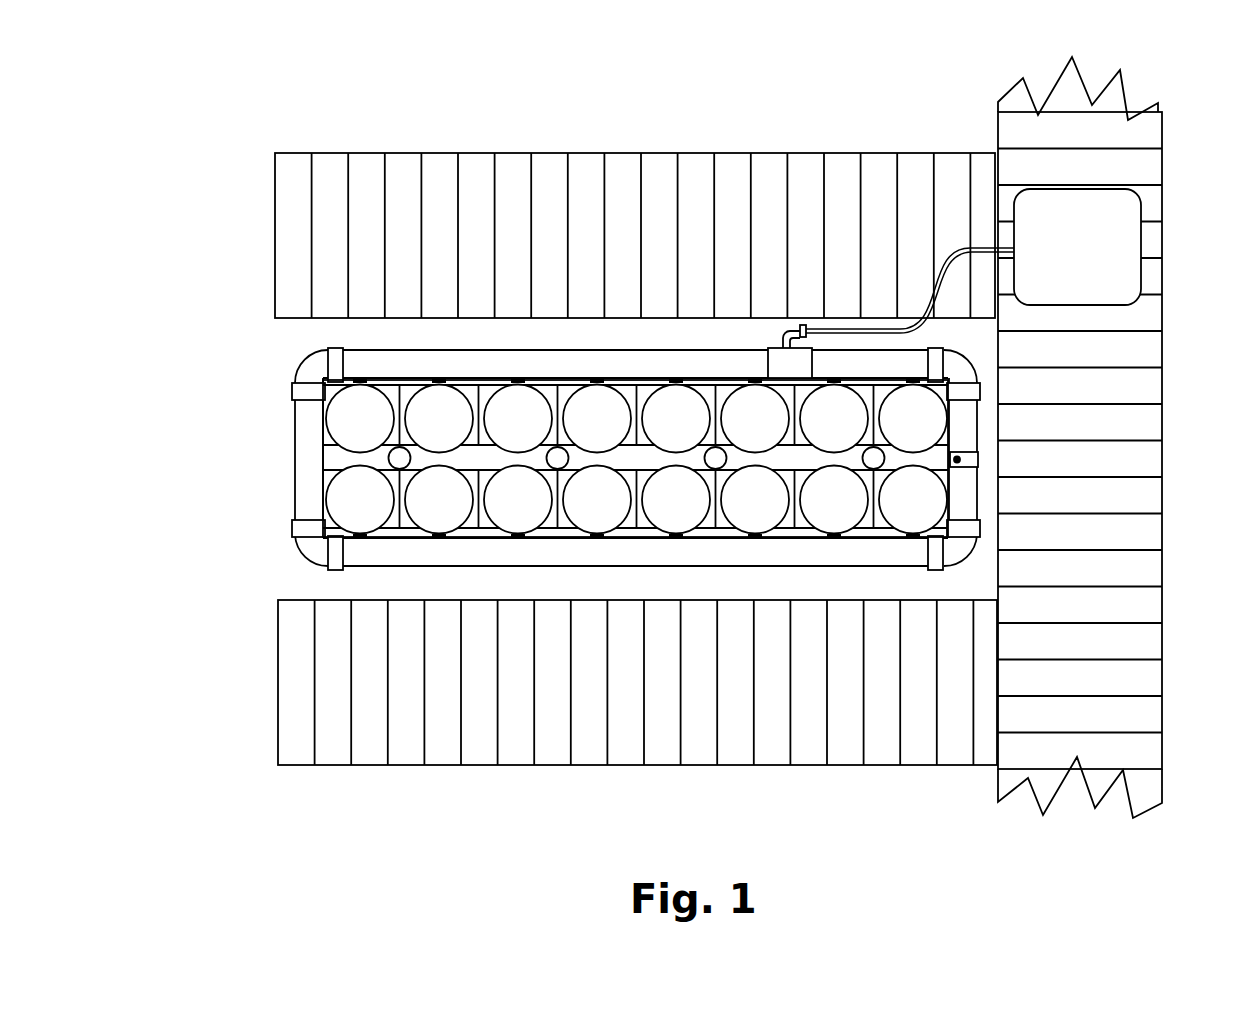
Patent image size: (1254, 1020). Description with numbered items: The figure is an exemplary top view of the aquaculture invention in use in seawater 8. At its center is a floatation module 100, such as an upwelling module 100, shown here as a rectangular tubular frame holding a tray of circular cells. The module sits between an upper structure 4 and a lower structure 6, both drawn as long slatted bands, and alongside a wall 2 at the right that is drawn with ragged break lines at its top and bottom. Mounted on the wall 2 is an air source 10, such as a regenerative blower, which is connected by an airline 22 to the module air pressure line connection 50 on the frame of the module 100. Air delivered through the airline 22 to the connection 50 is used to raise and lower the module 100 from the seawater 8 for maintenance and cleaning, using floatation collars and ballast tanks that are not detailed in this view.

The wall 2 is at (1137, 492).
The upper shelf 4 is at (432, 173).
The lower shelf 6 is at (405, 747).
The seawater 8 is at (587, 458).
The air source 10 is at (1077, 247).
The airline 22 is at (955, 257).
The module air pressure line connection 50 is at (795, 326).
The floatation module 100 is at (257, 547).